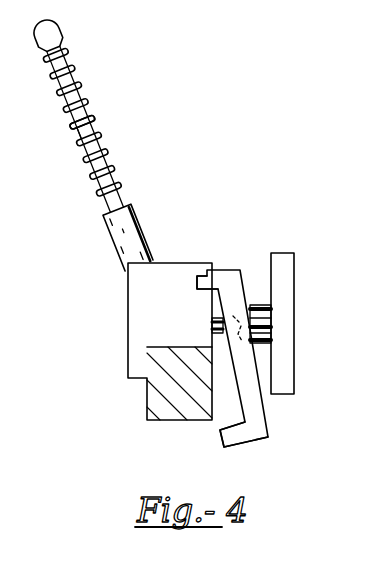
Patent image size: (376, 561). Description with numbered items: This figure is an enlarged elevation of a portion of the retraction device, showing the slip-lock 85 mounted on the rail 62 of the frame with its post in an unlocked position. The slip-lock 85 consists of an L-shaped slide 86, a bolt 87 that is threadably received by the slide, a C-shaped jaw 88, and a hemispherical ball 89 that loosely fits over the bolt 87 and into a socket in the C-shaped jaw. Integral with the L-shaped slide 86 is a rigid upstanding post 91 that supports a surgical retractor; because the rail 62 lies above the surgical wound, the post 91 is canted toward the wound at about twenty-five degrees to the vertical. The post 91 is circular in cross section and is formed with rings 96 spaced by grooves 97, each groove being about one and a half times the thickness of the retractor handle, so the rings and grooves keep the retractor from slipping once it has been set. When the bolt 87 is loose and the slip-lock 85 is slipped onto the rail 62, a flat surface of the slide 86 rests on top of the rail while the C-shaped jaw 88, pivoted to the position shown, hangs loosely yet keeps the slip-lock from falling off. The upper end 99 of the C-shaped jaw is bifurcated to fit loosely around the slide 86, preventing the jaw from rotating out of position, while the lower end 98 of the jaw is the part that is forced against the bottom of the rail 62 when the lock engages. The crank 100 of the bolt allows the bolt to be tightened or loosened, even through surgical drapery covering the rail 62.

The rail 62 is at (163, 417).
The slip-lock 85 is at (137, 341).
The L-shaped slide 86 is at (127, 322).
The bolt 87 is at (210, 327).
The C-shaped jaw 88 is at (262, 420).
The hemispherical ball 89 is at (262, 322).
The upstanding post 91 is at (76, 57).
The rings 96 is at (74, 131).
The grooves 97 is at (104, 144).
The lever foot 98 is at (242, 443).
The upper end 99 is at (221, 268).
The crank 100 is at (294, 276).